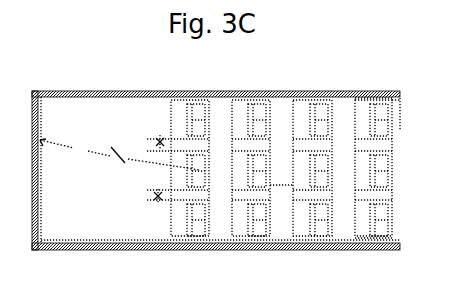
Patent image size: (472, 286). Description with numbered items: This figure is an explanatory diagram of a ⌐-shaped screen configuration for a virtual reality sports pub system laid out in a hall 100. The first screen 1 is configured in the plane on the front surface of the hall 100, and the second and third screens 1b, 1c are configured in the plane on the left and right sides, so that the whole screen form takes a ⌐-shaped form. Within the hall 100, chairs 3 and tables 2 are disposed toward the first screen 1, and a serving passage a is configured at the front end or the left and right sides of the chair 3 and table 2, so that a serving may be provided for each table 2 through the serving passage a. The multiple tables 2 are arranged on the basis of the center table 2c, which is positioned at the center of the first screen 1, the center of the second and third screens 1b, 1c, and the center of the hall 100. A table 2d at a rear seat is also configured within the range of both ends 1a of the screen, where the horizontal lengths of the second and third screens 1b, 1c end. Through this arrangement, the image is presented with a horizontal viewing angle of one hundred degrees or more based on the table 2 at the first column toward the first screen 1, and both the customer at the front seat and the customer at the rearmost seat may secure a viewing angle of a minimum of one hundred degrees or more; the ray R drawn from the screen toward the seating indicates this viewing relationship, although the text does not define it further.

The hall 100 is at (229, 169).
The first screen 1 is at (229, 169).
The both ends of the screen 1a is at (402, 120).
The second screen 1b is at (200, 92).
The third screen 1c is at (137, 250).
The table 2 is at (172, 223).
The center table 2c is at (301, 180).
The table at a rear seat 2d is at (364, 92).
The chair 3 is at (269, 173).
The light ray R is at (120, 154).
The serving passage a is at (282, 173).